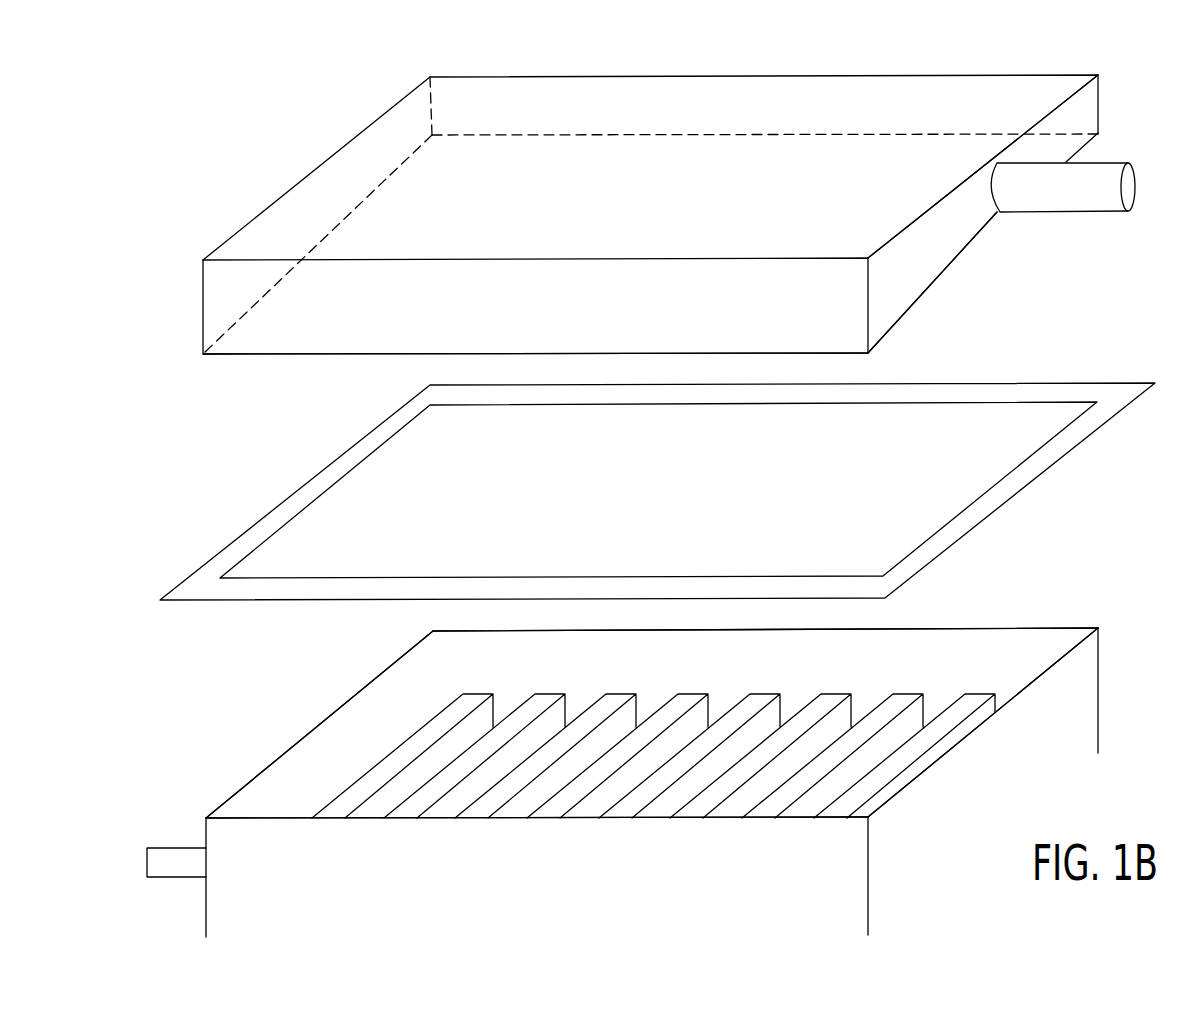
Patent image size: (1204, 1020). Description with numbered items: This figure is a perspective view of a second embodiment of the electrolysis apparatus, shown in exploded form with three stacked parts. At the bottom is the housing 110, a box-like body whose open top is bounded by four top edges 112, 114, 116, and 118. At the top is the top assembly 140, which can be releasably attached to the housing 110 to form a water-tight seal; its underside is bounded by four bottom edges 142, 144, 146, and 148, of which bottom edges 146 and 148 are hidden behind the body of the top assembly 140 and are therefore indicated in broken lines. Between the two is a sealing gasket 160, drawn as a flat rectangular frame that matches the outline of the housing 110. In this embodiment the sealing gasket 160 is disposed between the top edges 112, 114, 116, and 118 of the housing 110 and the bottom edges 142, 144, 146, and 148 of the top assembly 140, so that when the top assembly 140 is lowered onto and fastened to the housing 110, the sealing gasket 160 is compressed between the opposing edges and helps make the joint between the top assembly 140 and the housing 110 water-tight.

The housing 110 is at (666, 744).
The top edge 112 is at (285, 823).
The top edge 114 is at (1055, 658).
The top edge 116 is at (978, 625).
The top edge 118 is at (313, 728).
The top assembly 140 is at (697, 240).
The bottom edge 142 is at (333, 358).
The bottom edge 144 is at (968, 253).
The bottom edge 146 is at (758, 136).
The bottom edge 148 is at (317, 215).
The sealing gasket 160 is at (1093, 380).